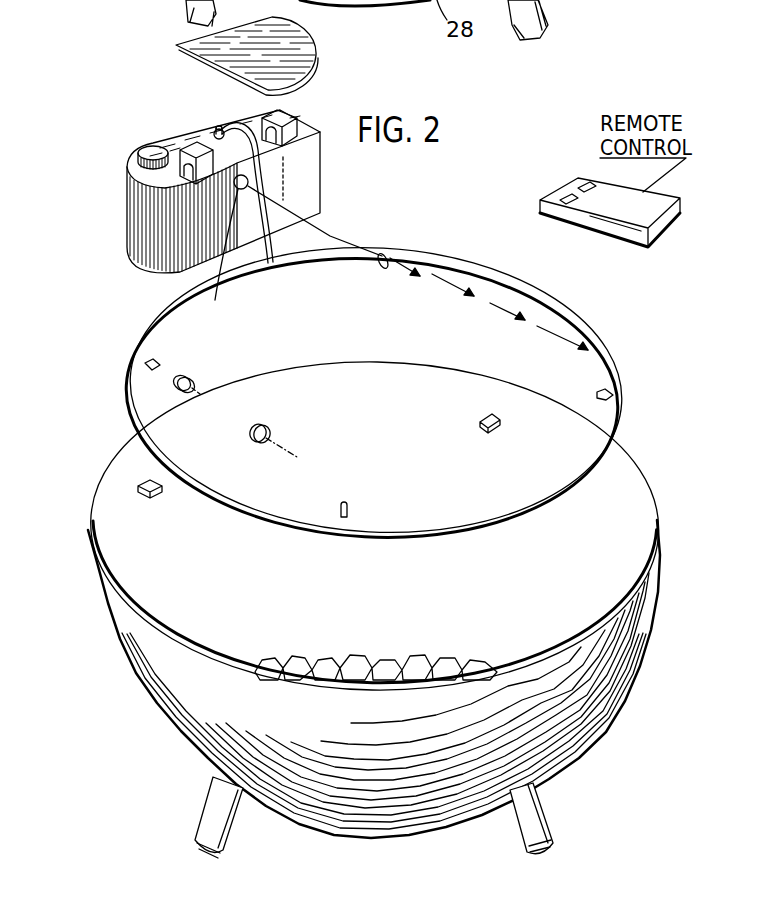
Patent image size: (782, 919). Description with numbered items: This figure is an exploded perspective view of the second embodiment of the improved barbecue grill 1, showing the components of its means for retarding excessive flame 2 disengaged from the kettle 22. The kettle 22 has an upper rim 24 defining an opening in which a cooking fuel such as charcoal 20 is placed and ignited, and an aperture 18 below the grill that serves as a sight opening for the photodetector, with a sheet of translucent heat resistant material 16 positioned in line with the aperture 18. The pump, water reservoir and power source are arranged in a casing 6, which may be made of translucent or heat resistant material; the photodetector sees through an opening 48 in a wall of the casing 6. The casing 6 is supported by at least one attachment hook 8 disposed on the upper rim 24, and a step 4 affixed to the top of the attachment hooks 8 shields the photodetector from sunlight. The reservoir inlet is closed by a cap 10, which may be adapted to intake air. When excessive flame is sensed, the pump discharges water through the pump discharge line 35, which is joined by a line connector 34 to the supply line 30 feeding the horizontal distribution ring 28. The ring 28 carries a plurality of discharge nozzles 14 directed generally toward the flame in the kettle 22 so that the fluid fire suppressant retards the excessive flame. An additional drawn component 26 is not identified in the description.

The barbecue grill 1 is at (175, 26).
The means for retarding excessive flame 2 is at (130, 49).
The step 4 is at (318, 50).
The casing 6 is at (322, 160).
The attachment hook 8 is at (290, 127).
The cap 10 is at (150, 150).
The discharge nozzle 14 is at (158, 360).
The sheet of translucent heat resistant material 16 is at (191, 383).
The aperture 18 is at (266, 433).
The charcoal 20 is at (363, 658).
The kettle 22 is at (627, 702).
The upper rim 24 is at (573, 632).
The pump 26 is at (160, 494).
The horizontal distribution ring 28 is at (603, 338).
The supply line 30 is at (348, 247).
The line connector 34 is at (218, 128).
The pump discharge line 35 is at (213, 128).
The opening 48 is at (228, 253).